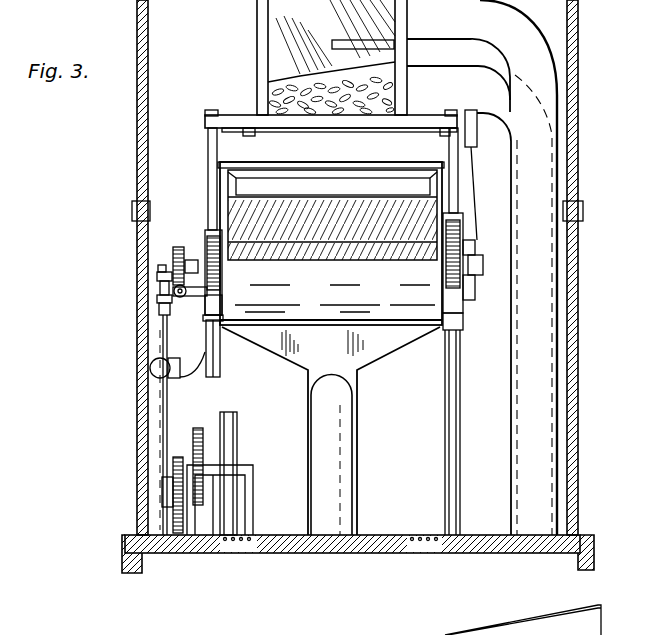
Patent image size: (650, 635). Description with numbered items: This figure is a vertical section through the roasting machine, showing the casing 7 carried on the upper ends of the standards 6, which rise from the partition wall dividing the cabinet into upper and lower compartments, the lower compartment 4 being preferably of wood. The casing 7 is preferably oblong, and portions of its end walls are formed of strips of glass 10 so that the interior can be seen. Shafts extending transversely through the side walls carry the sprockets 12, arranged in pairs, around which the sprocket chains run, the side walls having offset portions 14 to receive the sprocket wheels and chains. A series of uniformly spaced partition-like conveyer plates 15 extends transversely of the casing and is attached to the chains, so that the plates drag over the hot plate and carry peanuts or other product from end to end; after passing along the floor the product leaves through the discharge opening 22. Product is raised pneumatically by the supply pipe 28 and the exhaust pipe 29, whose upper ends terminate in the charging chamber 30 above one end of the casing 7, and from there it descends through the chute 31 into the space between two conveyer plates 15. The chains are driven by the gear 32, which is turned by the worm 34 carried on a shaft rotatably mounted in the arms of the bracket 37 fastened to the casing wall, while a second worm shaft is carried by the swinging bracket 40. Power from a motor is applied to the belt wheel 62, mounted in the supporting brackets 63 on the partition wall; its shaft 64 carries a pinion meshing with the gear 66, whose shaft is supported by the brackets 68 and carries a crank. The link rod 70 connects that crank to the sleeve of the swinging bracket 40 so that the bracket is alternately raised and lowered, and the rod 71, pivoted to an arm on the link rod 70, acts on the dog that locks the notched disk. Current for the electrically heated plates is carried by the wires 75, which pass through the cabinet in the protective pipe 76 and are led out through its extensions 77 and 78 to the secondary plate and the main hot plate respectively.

The lower compartment 4 is at (358, 559).
The standards 6 is at (218, 368).
The casing 7 is at (331, 243).
The strips of glass 10 is at (404, 254).
The sprockets 12 is at (220, 270).
The offset portions 14 is at (208, 307).
The conveyer plates 15 is at (322, 232).
The discharge opening 22 is at (331, 431).
The supply pipe 28 is at (486, 307).
The exhaust pipe 29 is at (482, 267).
The charging chamber 30 is at (292, 34).
The chute 31 is at (247, 185).
The gear 32 is at (179, 247).
The worm 34 is at (160, 291).
The bracket 37 is at (215, 302).
The swinging bracket 40 is at (191, 260).
The belt wheel 62 is at (237, 415).
The supporting brackets 63 is at (253, 497).
The shaft 64 is at (213, 478).
The gear 66 is at (200, 428).
The brackets 68 is at (180, 457).
The link rod 70 is at (163, 347).
The rod 71 is at (160, 297).
The wires 75 is at (193, 375).
The pipe 76 is at (158, 431).
The extension 77 is at (152, 370).
The extension 78 is at (165, 265).